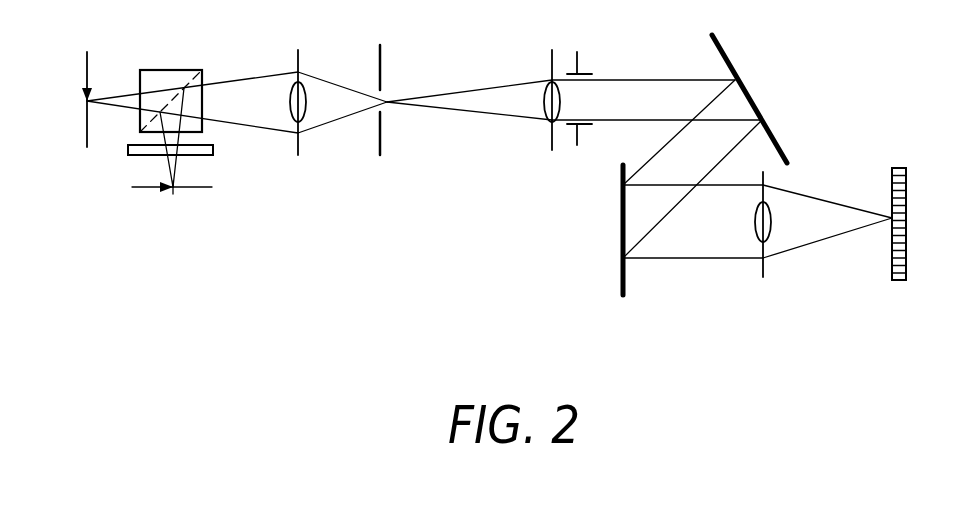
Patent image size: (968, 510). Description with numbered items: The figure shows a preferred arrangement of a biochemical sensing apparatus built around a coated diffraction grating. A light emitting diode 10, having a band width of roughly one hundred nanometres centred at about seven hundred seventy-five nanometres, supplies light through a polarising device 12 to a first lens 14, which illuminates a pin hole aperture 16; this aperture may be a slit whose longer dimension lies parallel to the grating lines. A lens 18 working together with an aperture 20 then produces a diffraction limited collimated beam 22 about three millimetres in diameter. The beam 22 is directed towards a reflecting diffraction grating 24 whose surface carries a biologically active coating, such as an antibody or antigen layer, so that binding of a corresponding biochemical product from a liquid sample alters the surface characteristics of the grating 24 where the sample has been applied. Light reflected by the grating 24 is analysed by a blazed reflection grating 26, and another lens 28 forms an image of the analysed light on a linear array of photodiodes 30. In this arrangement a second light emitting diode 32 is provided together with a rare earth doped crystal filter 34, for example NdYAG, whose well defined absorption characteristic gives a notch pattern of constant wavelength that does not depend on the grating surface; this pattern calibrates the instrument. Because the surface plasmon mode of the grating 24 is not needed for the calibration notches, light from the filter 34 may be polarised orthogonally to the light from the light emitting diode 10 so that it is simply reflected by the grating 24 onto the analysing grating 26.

The light emitting diode 10 is at (87, 117).
The polarising device 12 is at (170, 70).
The first lens 14 is at (298, 68).
The pin hole aperture 16 is at (381, 62).
The lens 18 is at (552, 66).
The aperture 20 is at (580, 72).
The collimated beam 22 is at (672, 80).
The reflecting diffraction grating 24 is at (732, 66).
The blazed reflection grating 26 is at (622, 276).
The lens 28 is at (765, 266).
The linear array of photodiodes 30 is at (906, 186).
The second light emitting diode 32 is at (185, 190).
The rare earth doped crystal filter 34 is at (213, 154).